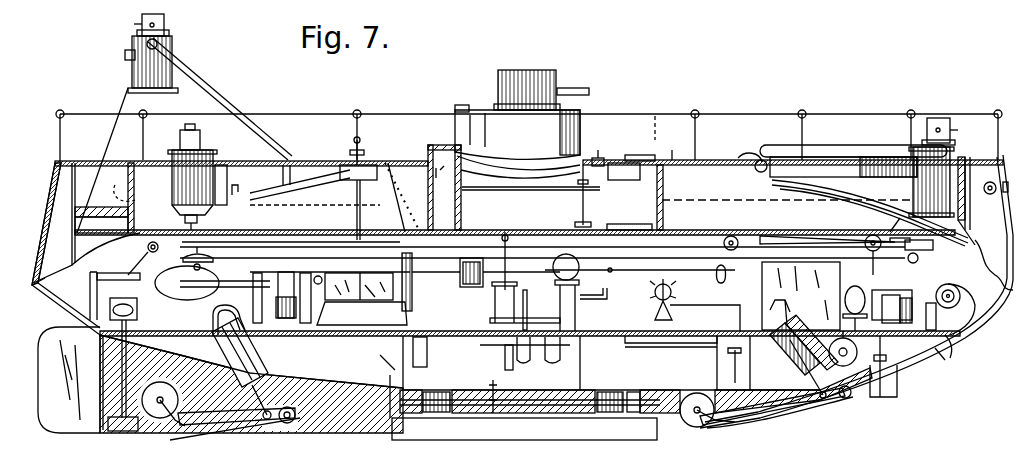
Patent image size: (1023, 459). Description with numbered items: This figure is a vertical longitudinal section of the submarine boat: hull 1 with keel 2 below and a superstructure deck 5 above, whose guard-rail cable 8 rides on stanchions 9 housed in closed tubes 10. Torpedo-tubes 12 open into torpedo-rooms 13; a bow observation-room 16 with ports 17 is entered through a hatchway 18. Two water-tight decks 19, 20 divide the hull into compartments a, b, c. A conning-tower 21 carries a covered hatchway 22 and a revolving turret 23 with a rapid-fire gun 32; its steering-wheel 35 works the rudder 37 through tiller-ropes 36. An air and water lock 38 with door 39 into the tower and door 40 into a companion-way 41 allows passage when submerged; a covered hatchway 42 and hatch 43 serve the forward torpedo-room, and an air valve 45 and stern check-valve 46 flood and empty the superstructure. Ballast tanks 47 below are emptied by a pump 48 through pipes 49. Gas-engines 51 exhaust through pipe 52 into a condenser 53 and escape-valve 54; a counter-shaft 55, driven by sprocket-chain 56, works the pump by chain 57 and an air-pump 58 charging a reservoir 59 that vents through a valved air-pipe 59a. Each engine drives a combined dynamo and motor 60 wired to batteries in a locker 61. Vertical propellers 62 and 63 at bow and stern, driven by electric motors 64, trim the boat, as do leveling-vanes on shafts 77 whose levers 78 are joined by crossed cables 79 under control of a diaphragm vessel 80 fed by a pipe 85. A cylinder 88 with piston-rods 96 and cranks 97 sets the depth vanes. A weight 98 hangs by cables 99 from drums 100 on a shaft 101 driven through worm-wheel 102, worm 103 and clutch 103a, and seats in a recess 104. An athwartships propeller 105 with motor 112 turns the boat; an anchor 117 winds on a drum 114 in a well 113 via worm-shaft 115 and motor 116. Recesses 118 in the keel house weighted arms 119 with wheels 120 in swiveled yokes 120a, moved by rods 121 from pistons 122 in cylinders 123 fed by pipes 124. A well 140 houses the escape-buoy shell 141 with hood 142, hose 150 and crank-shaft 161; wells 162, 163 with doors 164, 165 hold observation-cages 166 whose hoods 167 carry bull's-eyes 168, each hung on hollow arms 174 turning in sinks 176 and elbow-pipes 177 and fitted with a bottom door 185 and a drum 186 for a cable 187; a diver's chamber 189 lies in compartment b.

The hull 1 is at (940, 353).
The keel 2 is at (340, 425).
The deck 5 is at (676, 149).
The rope or cable 8 is at (740, 114).
The stanchions 9 is at (60, 143).
The tubes 10 is at (655, 116).
The torpedo-tubes 12 is at (515, 195).
The torpedo-rooms 13 is at (649, 197).
The observation-room 16 is at (981, 193).
The observation-ports 17 is at (987, 185).
The hatchway 18 is at (994, 265).
The deck 19 is at (705, 231).
The deck 20 is at (355, 362).
The conning-tower 21 is at (517, 144).
The covered hatchway 22 is at (461, 108).
The turret 23 is at (527, 90).
The rapid-fire gun 32 is at (573, 84).
The steering-wheel 35 is at (531, 196).
The tiller-ropes 36 is at (375, 246).
The rudder 37 is at (69, 380).
The air and water lock 38 is at (444, 187).
The door 39 is at (462, 214).
The door 40 is at (410, 440).
The companion-way 41 is at (403, 197).
The covered hatchway 42 is at (631, 167).
The hatch 43 is at (629, 220).
The valve 45 is at (598, 157).
The check-valve 46 is at (30, 283).
The tanks 47 is at (530, 374).
The pump 48 is at (580, 292).
The pipes 49 is at (559, 359).
The gas-engines 51 is at (359, 291).
The exhaust-pipe 52 is at (357, 214).
The condenser 53 is at (358, 173).
The escape-valve 54 is at (438, 225).
The counter-shaft 55 is at (429, 352).
The sprocket-chain 56 is at (412, 290).
The chain 57 is at (330, 297).
The air-pump 58 is at (514, 296).
The reservoir 59 is at (542, 247).
The valved air-pipe 59a is at (786, 199).
The combined dynamo and motor 60 is at (286, 288).
The locker 61 is at (679, 301).
The vertically-operating propeller 62 is at (880, 397).
The vertically-operating propeller 63 is at (122, 436).
The electric motors 64 is at (75, 300).
The shafts 77 is at (873, 255).
The levers 78 is at (900, 218).
The crossed cables 79 is at (812, 238).
The vessel 80 is at (916, 241).
The pipe 85 is at (921, 262).
The cylinder 88 is at (486, 265).
The piston-rods 96 is at (640, 264).
The cranks 97 is at (525, 274).
The weight 98 is at (662, 401).
The cables 99 is at (627, 413).
The drums 100 is at (602, 413).
The shaft 101 is at (540, 410).
The worm-wheel 102 is at (463, 413).
The worm 103 is at (493, 382).
The clutch 103a is at (514, 368).
The recess 104 is at (655, 445).
The athwartships propeller 105 is at (832, 340).
The electric motor 112 is at (852, 302).
The well 113 is at (974, 309).
The drum 114 is at (948, 284).
The worm-shaft 115 is at (943, 316).
The electric motor 116 is at (912, 298).
The anchor 117 is at (963, 346).
The recesses 118 is at (511, 426).
The weights 119 is at (240, 425).
The wheels 120 is at (158, 418).
The yokes 120a is at (450, 429).
The rods 121 is at (262, 440).
The pistons 122 is at (205, 330).
The cylinders 123 is at (245, 350).
The pipes 124 is at (529, 316).
The well 140 is at (220, 165).
The closed cylindrical shell 141 is at (192, 182).
The hood 142 is at (192, 130).
The hose 150 is at (185, 219).
The crank-shaft 161 is at (240, 182).
The well 162 is at (918, 155).
The well 163 is at (101, 196).
The hatch or door 164 is at (101, 226).
The hatch or door 165 is at (873, 215).
The closed cylindrical vessel 166 is at (168, 44).
The hood 167 is at (155, 22).
The bull's-eyes 168 is at (947, 188).
The hollow arms 174 is at (225, 96).
The sinks 176 is at (290, 170).
The elbow-pipes 177 is at (518, 186).
The door 185 is at (153, 96).
The drum 186 is at (125, 55).
The cable 187 is at (120, 104).
The air and water lock and diver's chamber 189 is at (801, 296).
The compartment a is at (735, 189).
The compartment b is at (625, 288).
The compartment c is at (766, 374).